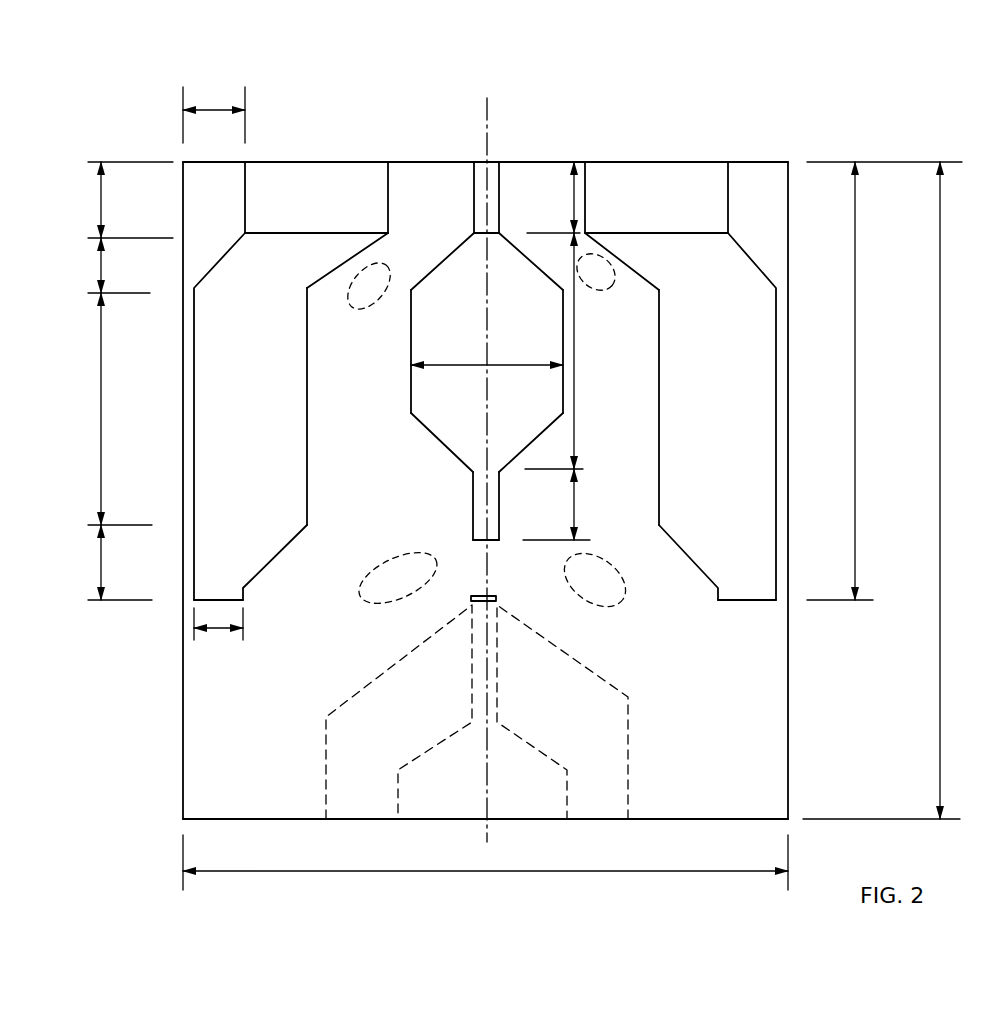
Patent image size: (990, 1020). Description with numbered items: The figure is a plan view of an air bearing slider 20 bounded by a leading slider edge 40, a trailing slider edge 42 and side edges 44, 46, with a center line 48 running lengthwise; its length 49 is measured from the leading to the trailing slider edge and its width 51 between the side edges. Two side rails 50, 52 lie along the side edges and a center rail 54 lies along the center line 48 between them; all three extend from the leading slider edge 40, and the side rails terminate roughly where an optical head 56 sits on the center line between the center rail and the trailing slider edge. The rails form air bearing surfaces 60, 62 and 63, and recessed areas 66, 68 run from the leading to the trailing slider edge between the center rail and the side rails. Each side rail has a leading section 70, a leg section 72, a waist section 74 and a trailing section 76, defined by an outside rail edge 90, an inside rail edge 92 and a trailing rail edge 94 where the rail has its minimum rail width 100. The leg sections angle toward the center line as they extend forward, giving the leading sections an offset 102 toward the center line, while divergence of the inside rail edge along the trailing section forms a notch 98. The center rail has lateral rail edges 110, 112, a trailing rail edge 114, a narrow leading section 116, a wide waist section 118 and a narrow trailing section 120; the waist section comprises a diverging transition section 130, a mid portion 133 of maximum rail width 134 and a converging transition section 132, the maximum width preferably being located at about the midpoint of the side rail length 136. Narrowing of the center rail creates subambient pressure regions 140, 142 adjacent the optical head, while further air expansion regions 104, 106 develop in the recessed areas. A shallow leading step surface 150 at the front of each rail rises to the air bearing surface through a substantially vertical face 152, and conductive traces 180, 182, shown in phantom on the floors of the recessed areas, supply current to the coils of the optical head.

The slider 20 is at (862, 146).
The leading slider edge 40 is at (767, 161).
The trailing slider edge 42 is at (683, 821).
The side edge 44 is at (183, 788).
The side edge 46 is at (788, 700).
The center line 48 is at (495, 115).
The length 49 is at (941, 441).
The side rail 50 is at (326, 160).
The width 51 is at (576, 872).
The side rail 52 is at (646, 160).
The center rail 54 is at (486, 160).
The optical head 56 is at (495, 596).
The air bearing surface 60 is at (247, 345).
The air bearing surface 62 is at (733, 387).
The air bearing surface 63 is at (445, 403).
The recessed area 66 is at (370, 393).
The recessed area 68 is at (640, 420).
The leading section 70 is at (101, 207).
The leg section 72 is at (101, 268).
The waist section 74 is at (101, 408).
The trailing section 76 is at (101, 565).
The outside rail edge 90 is at (245, 197).
The inside rail edge 92 is at (388, 196).
The trailing rail edge 94 is at (227, 603).
The notch 98 is at (264, 574).
The minimum rail width 100 is at (215, 632).
The offset 102 is at (214, 108).
The region 104 is at (352, 274).
The region 106 is at (614, 259).
The lateral rail edge 110 is at (474, 181).
The lateral rail edge 112 is at (502, 190).
The trailing rail edge 114 is at (473, 540).
The narrow leading section 116 is at (576, 202).
The wide waist section 118 is at (576, 318).
The narrow trailing section 120 is at (576, 492).
The transition section 130 is at (433, 265).
The transition section 132 is at (427, 433).
The mid portion 133 is at (409, 343).
The maximum rail width 134 is at (497, 368).
The length 136 is at (856, 402).
The subambient pressure region 140 is at (382, 570).
The subambient pressure region 142 is at (613, 562).
The leading step surface 150 is at (362, 185).
The substantially vertical face 152 is at (296, 233).
The conductive trace 180 is at (355, 787).
The conductive trace 182 is at (602, 767).